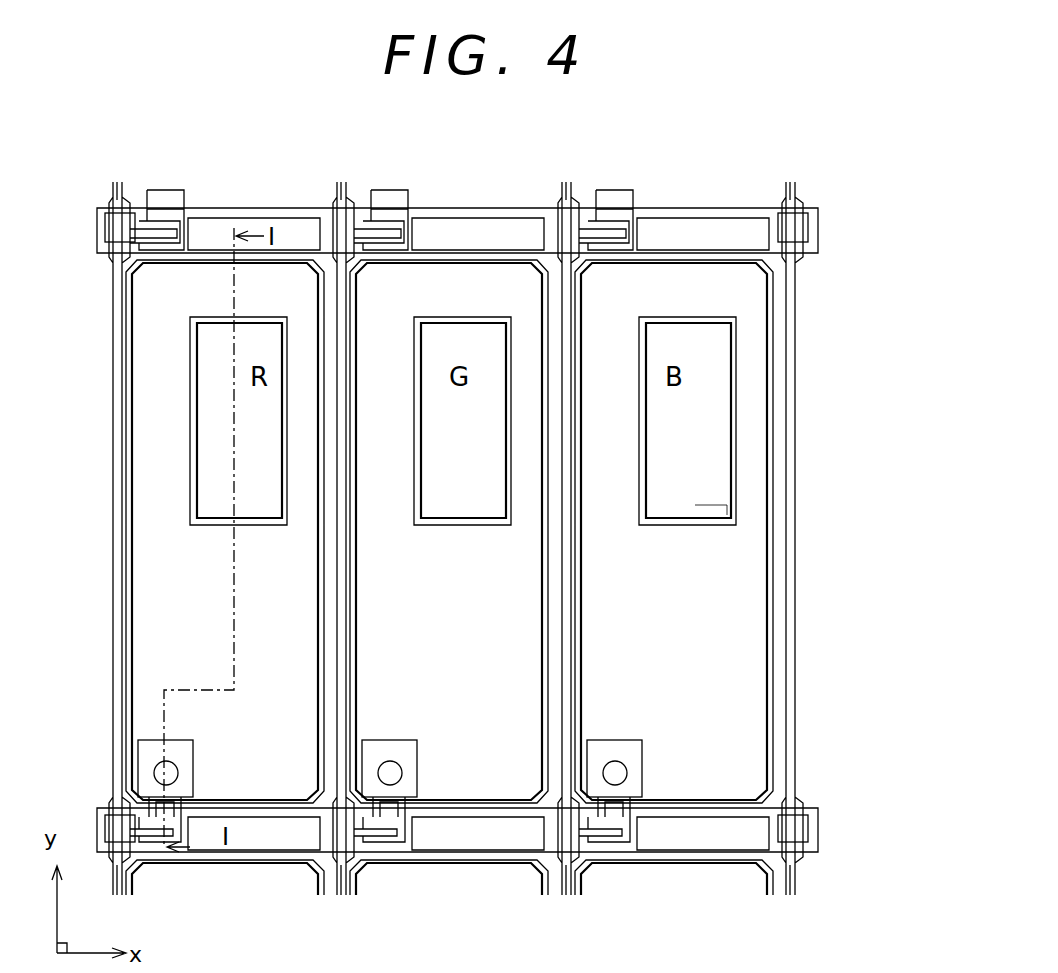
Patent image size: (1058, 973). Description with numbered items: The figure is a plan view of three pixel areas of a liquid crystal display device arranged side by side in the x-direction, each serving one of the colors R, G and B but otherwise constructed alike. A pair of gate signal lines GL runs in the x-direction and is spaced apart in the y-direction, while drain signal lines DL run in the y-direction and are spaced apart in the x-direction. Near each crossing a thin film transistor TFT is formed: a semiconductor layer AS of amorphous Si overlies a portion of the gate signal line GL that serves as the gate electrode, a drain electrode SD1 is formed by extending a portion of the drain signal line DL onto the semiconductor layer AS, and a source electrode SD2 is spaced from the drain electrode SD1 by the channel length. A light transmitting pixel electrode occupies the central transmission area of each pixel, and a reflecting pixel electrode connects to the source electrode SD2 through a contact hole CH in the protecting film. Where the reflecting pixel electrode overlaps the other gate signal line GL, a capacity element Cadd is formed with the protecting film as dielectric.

The drain signal line DL is at (562, 192).
The gate signal line GL is at (820, 238).
The capacity element Cadd is at (670, 238).
The source electrode SD2 is at (626, 752).
The contact hole CH is at (620, 773).
The drain electrode SD1 is at (615, 843).
The thin film transistor TFT is at (614, 835).
The semiconductor layer AS is at (625, 823).